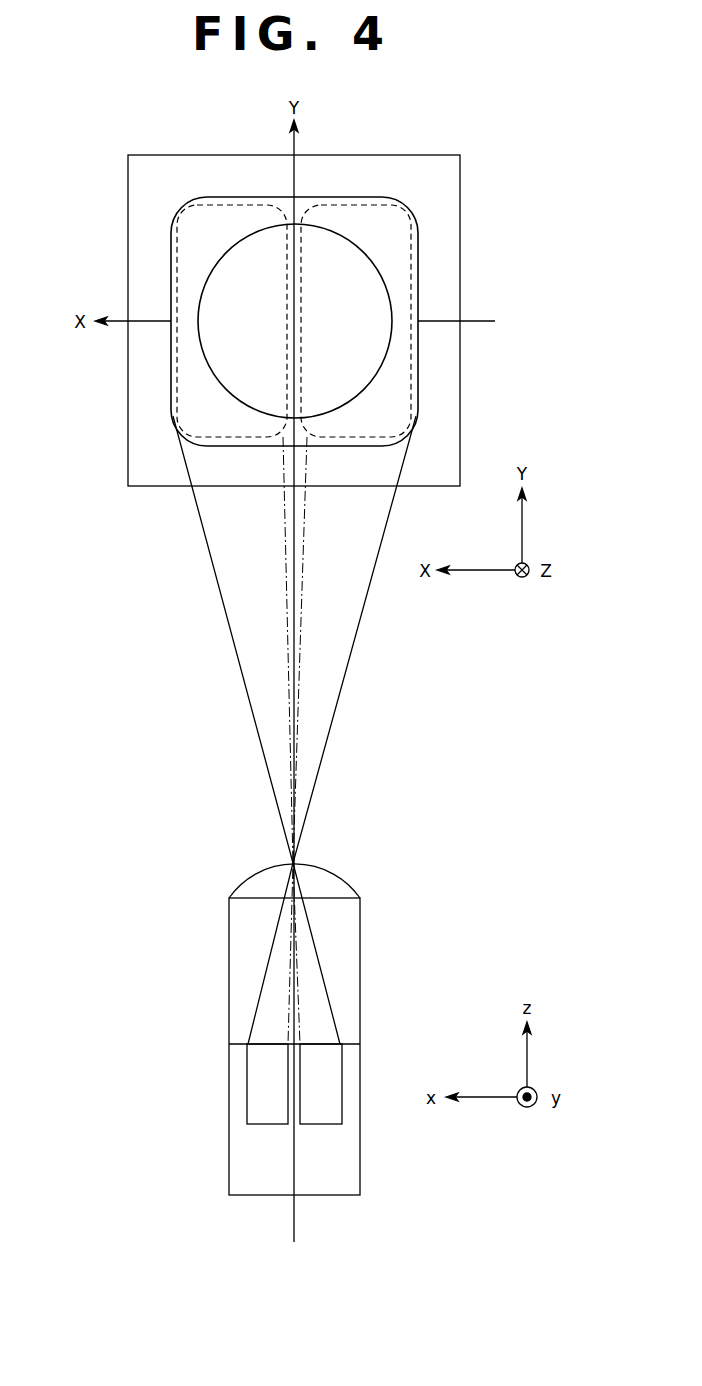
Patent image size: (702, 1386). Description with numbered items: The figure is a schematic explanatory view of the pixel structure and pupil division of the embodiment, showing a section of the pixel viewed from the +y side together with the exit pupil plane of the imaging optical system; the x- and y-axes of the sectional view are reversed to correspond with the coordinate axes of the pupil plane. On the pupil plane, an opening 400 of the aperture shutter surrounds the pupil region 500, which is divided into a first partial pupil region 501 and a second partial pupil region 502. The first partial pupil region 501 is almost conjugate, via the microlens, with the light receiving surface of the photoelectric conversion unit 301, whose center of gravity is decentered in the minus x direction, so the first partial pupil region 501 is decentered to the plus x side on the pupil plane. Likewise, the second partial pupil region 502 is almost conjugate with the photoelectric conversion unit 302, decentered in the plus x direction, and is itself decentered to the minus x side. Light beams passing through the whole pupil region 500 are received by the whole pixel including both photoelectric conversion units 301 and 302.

The pupil region 500 is at (233, 197).
The opening of the aperture shutter 400 is at (388, 289).
The first partial pupil region 501 is at (253, 350).
The second partial pupil region 502 is at (340, 353).
The photoelectric conversion unit 301 is at (342, 1120).
The photoelectric conversion unit 302 is at (247, 1092).